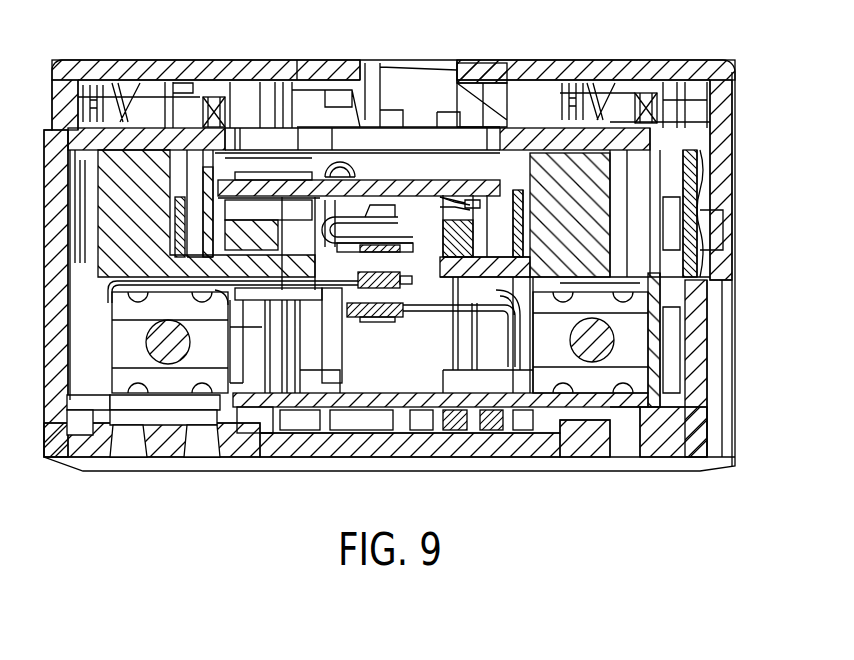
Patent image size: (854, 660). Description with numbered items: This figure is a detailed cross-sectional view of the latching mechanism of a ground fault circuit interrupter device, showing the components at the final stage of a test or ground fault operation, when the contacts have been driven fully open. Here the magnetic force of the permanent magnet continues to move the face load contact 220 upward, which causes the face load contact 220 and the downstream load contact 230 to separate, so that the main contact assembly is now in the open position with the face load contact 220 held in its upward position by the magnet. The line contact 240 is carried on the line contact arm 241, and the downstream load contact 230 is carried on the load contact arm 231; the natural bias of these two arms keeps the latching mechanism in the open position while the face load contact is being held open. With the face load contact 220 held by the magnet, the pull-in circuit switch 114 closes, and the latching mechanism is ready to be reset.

The pull-in circuit switch 114 is at (485, 206).
The face load contact 220 is at (373, 245).
The downstream load contact 230 is at (363, 293).
The load contact arm 231 is at (280, 281).
The line contact 240 is at (393, 328).
The line contact arm 241 is at (457, 312).